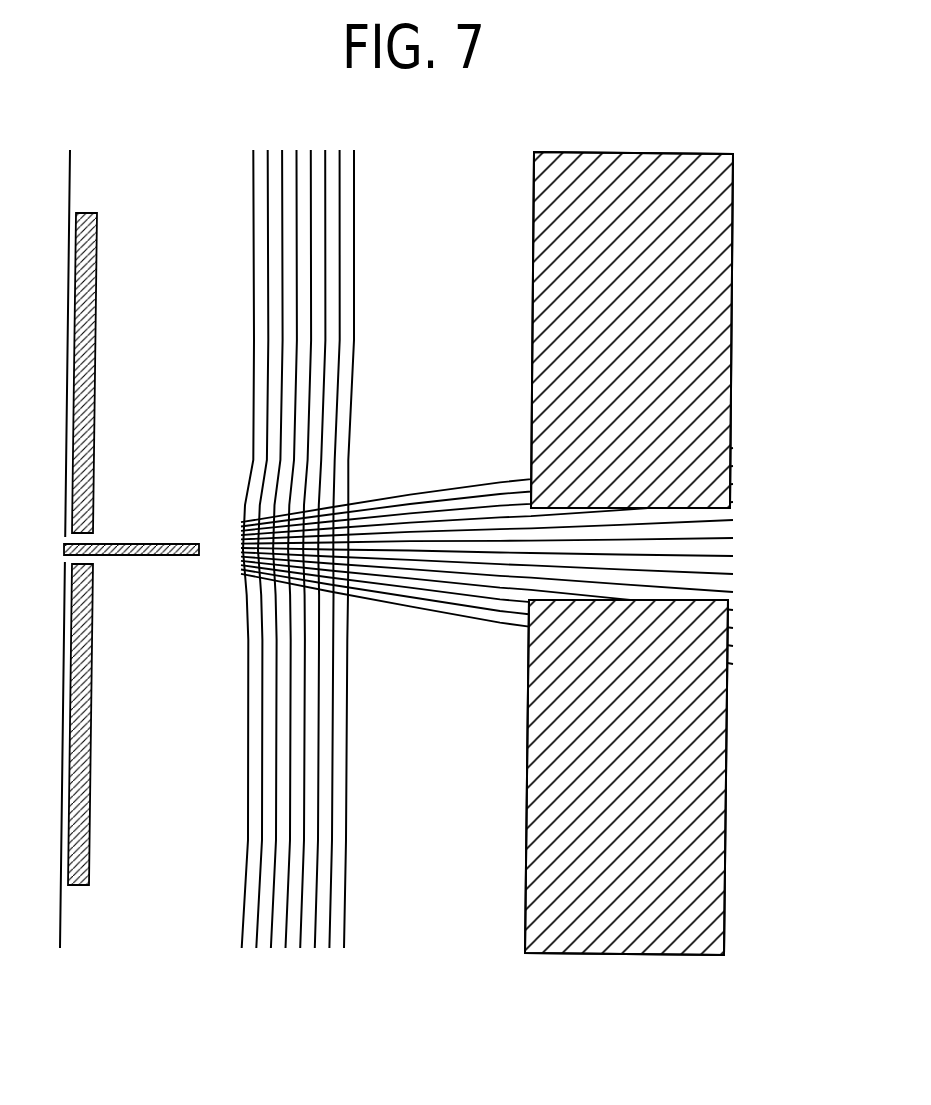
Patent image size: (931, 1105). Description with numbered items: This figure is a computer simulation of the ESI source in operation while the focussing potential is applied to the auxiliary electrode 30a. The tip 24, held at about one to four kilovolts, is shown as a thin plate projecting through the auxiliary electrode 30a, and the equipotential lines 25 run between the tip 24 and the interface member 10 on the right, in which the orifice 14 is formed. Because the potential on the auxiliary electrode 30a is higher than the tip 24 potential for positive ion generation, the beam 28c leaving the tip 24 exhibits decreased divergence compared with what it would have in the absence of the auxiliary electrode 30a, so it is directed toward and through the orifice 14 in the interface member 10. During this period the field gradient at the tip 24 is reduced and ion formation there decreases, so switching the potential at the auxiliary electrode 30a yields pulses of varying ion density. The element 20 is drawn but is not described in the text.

The interface member 10 is at (762, 317).
The orifice 14 is at (764, 547).
The electrode 20 is at (155, 521).
The tip 24 is at (200, 557).
The equipotential lines 25 is at (354, 216).
The beam 28c is at (468, 484).
The auxiliary electrode 30a is at (97, 267).